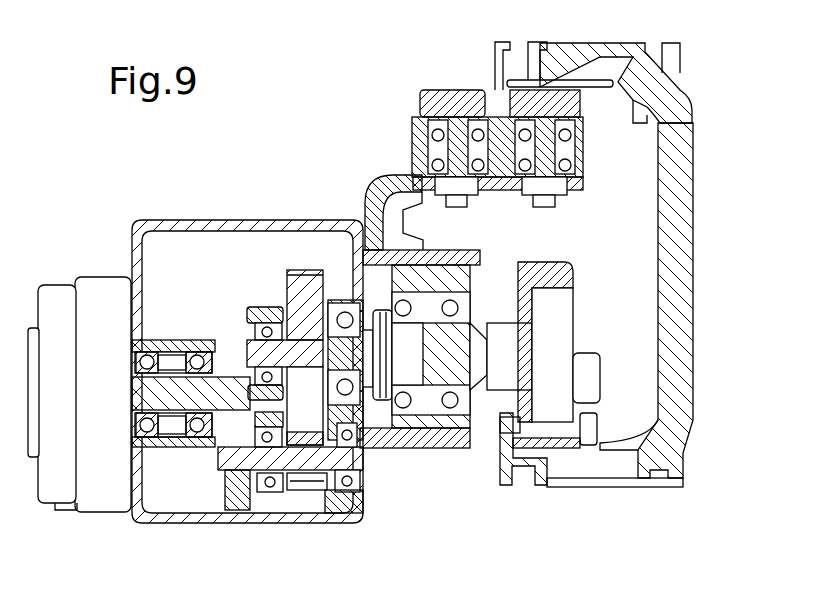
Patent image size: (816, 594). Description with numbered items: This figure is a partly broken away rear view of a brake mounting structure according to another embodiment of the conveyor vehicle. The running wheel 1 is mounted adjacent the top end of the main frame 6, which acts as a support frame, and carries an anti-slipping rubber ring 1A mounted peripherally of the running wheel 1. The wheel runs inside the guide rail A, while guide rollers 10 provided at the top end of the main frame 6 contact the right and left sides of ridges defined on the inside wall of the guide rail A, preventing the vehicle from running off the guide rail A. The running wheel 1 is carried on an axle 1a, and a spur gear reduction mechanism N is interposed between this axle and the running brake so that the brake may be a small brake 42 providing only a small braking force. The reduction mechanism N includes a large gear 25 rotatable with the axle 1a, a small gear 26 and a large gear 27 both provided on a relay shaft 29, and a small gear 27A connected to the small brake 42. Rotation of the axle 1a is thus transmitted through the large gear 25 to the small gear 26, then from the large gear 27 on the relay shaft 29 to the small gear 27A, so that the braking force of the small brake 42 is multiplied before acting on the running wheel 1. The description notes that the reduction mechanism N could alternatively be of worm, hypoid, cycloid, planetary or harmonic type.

The spur gear reduction mechanism N is at (268, 216).
The small gear 27A is at (233, 372).
The large gear 25 is at (291, 293).
The large gear 27 is at (240, 508).
The small gear 26 is at (307, 481).
The relay shaft 29 is at (361, 463).
The axle 1a is at (410, 357).
The running wheel 1 is at (574, 280).
The anti-slipping rubber ring 1A is at (558, 448).
The main frame 6 is at (384, 182).
The guide roller 10 is at (421, 90).
The guide rail A is at (688, 103).
The small brake 42 is at (107, 516).